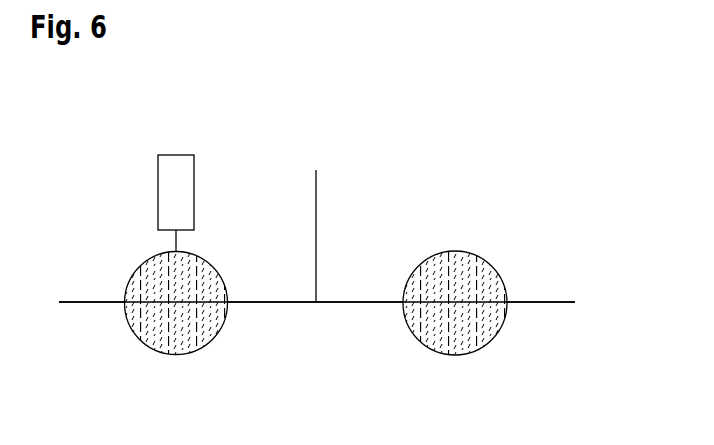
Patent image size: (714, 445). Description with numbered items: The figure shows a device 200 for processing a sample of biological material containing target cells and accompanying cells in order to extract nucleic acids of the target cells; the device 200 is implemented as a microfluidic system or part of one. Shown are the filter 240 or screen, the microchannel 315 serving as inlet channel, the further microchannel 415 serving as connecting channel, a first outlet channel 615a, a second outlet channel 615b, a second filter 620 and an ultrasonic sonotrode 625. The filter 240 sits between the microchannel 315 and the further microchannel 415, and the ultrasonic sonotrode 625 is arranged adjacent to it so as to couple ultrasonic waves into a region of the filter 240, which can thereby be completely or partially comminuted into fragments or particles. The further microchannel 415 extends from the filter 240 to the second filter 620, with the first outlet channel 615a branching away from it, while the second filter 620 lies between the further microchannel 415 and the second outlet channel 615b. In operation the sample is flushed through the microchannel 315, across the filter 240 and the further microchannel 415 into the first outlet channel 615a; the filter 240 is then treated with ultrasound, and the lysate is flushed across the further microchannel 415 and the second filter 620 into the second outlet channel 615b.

The device 200 is at (560, 117).
The microchannel 315 is at (82, 303).
The further microchannel 415 is at (275, 302).
The first outlet channel 615a is at (318, 182).
The second outlet channel 615b is at (557, 305).
The second filter 620 is at (175, 337).
The filter 240 is at (453, 337).
The ultrasonic sonotrode 625 is at (168, 186).